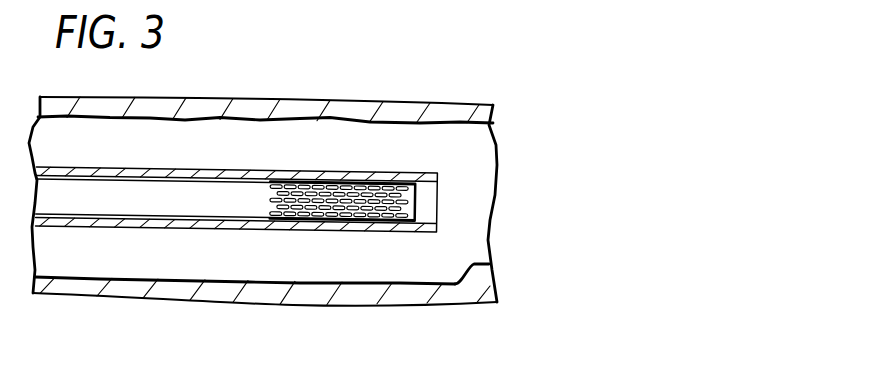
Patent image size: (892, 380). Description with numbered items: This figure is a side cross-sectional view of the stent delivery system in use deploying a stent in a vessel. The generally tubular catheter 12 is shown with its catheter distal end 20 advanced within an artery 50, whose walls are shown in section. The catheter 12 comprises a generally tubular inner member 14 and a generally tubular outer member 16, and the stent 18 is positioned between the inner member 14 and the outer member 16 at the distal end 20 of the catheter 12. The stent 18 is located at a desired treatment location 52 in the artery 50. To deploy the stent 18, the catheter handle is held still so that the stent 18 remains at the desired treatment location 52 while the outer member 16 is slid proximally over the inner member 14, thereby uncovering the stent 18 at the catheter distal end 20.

The catheter 12 is at (151, 153).
The inner member 14 is at (164, 214).
The outer member 16 is at (268, 247).
The stent 18 is at (349, 230).
The distal end 20 is at (438, 178).
The artery 50 is at (356, 97).
The desired treatment location 52 is at (489, 264).